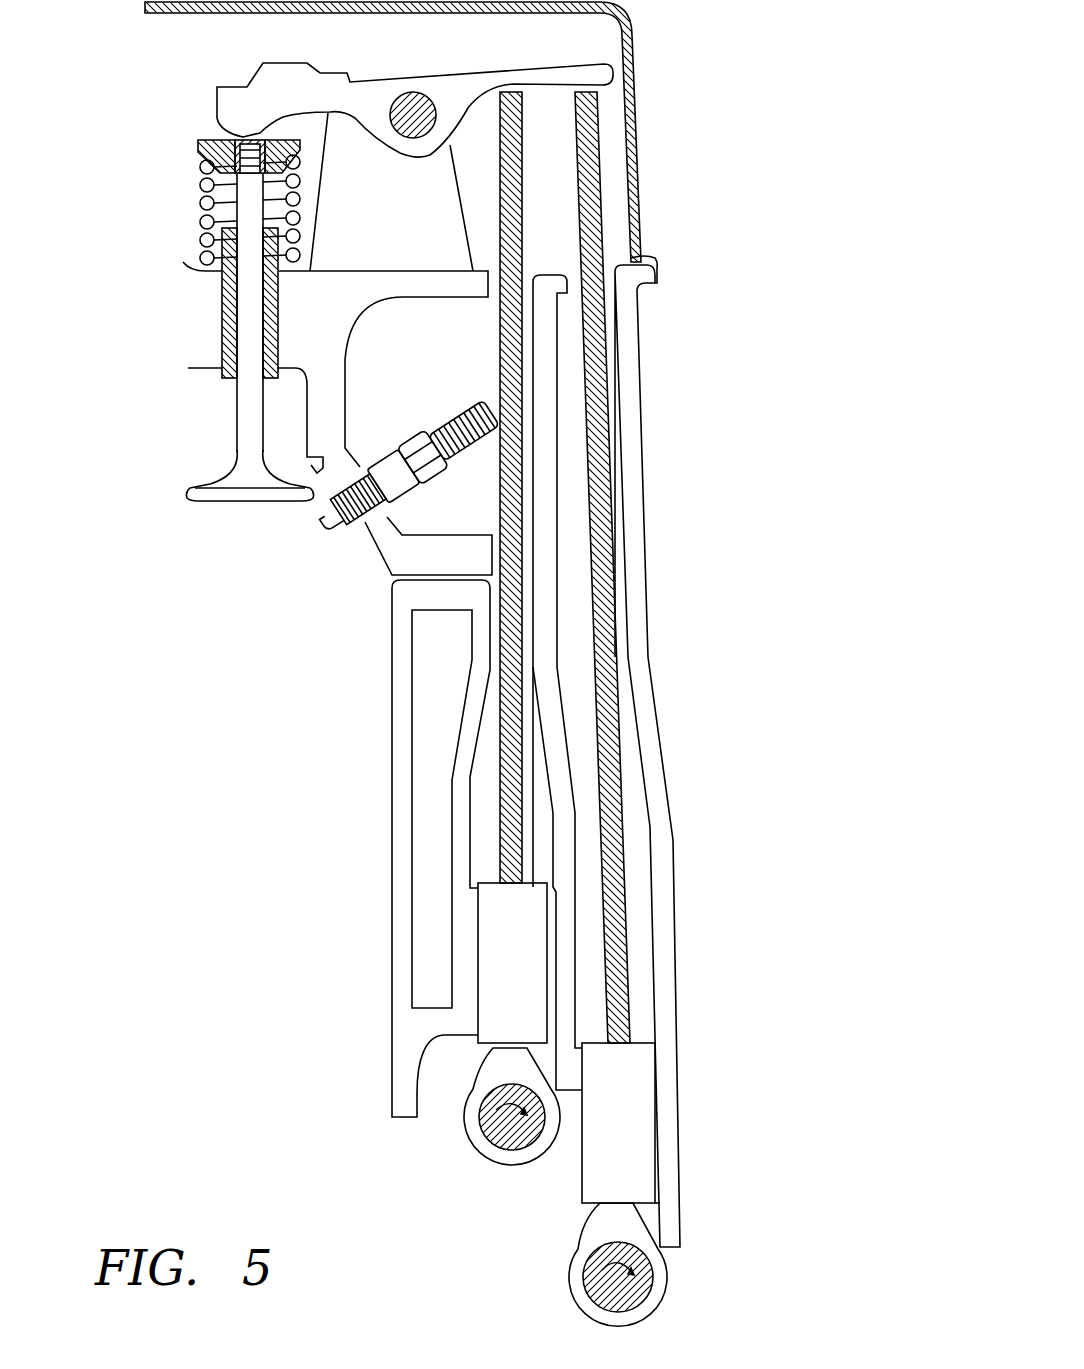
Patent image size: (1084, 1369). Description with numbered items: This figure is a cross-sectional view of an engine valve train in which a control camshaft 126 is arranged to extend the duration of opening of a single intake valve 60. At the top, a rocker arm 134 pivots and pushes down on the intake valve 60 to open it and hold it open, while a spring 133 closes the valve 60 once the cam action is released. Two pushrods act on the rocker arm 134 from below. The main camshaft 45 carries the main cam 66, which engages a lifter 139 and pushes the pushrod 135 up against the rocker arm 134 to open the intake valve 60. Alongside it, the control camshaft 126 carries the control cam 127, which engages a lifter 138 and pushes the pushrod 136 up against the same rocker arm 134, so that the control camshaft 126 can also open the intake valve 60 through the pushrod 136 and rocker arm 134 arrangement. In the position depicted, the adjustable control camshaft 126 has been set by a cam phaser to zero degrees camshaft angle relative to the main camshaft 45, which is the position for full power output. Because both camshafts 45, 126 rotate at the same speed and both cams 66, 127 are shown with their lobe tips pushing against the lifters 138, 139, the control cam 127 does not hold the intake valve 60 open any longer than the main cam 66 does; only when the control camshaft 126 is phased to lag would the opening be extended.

The rocker arm 134 is at (368, 90).
The spring 133 is at (203, 187).
The intake valve 60 is at (245, 437).
The pushrod 136 is at (587, 210).
The pushrod 135 is at (508, 815).
The lifter 139 is at (490, 953).
The main cam 66 is at (508, 1070).
The main camshaft 45 is at (477, 1133).
The lifter 138 is at (640, 1110).
The control cam 127 is at (618, 1232).
The control camshaft 126 is at (580, 1293).